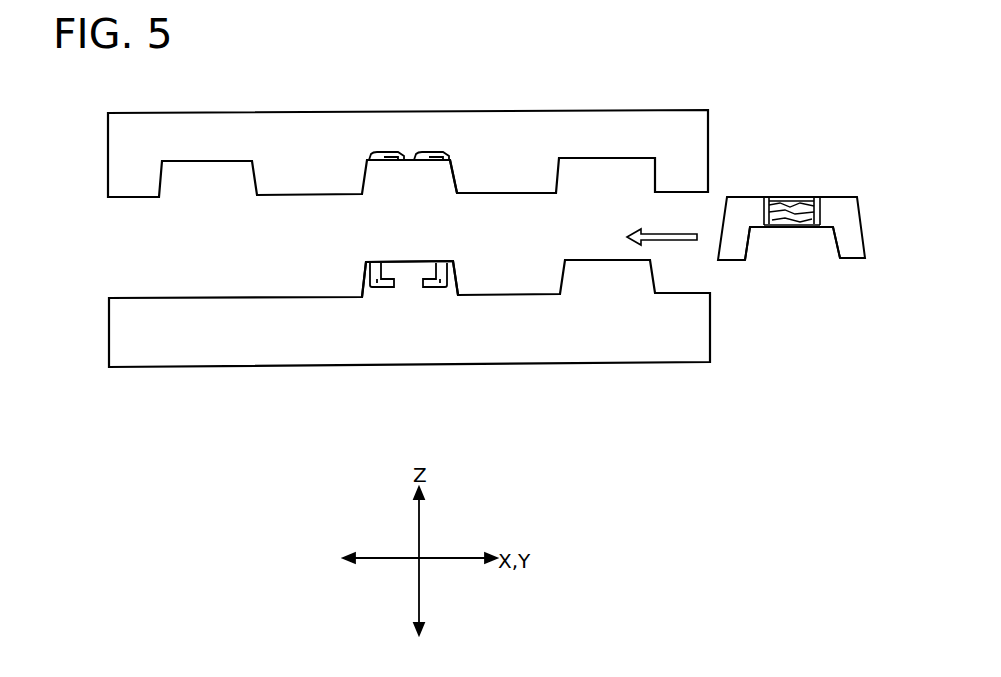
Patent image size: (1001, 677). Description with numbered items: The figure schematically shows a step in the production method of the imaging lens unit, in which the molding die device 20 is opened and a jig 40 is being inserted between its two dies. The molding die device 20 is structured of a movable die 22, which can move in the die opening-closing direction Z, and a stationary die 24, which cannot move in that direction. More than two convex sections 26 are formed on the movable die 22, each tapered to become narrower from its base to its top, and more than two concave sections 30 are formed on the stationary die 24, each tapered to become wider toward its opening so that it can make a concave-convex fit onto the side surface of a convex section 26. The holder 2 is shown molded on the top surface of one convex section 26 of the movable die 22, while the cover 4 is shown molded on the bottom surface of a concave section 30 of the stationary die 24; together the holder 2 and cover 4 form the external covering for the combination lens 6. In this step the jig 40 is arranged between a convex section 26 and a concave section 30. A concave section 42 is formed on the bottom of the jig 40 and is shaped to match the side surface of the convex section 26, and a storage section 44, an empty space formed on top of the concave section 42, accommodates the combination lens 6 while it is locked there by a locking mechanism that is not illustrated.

The molding die device 20 is at (76, 115).
The movable die 22 is at (123, 345).
The stationary die 24 is at (123, 152).
The convex section 26 is at (362, 280).
The concave section 30 is at (455, 180).
The holder 2 is at (443, 262).
The cover 4 is at (424, 150).
The combination lens 6 is at (792, 202).
The jig 40 is at (740, 205).
The concave section 42 is at (820, 243).
The storage section 44 is at (805, 197).